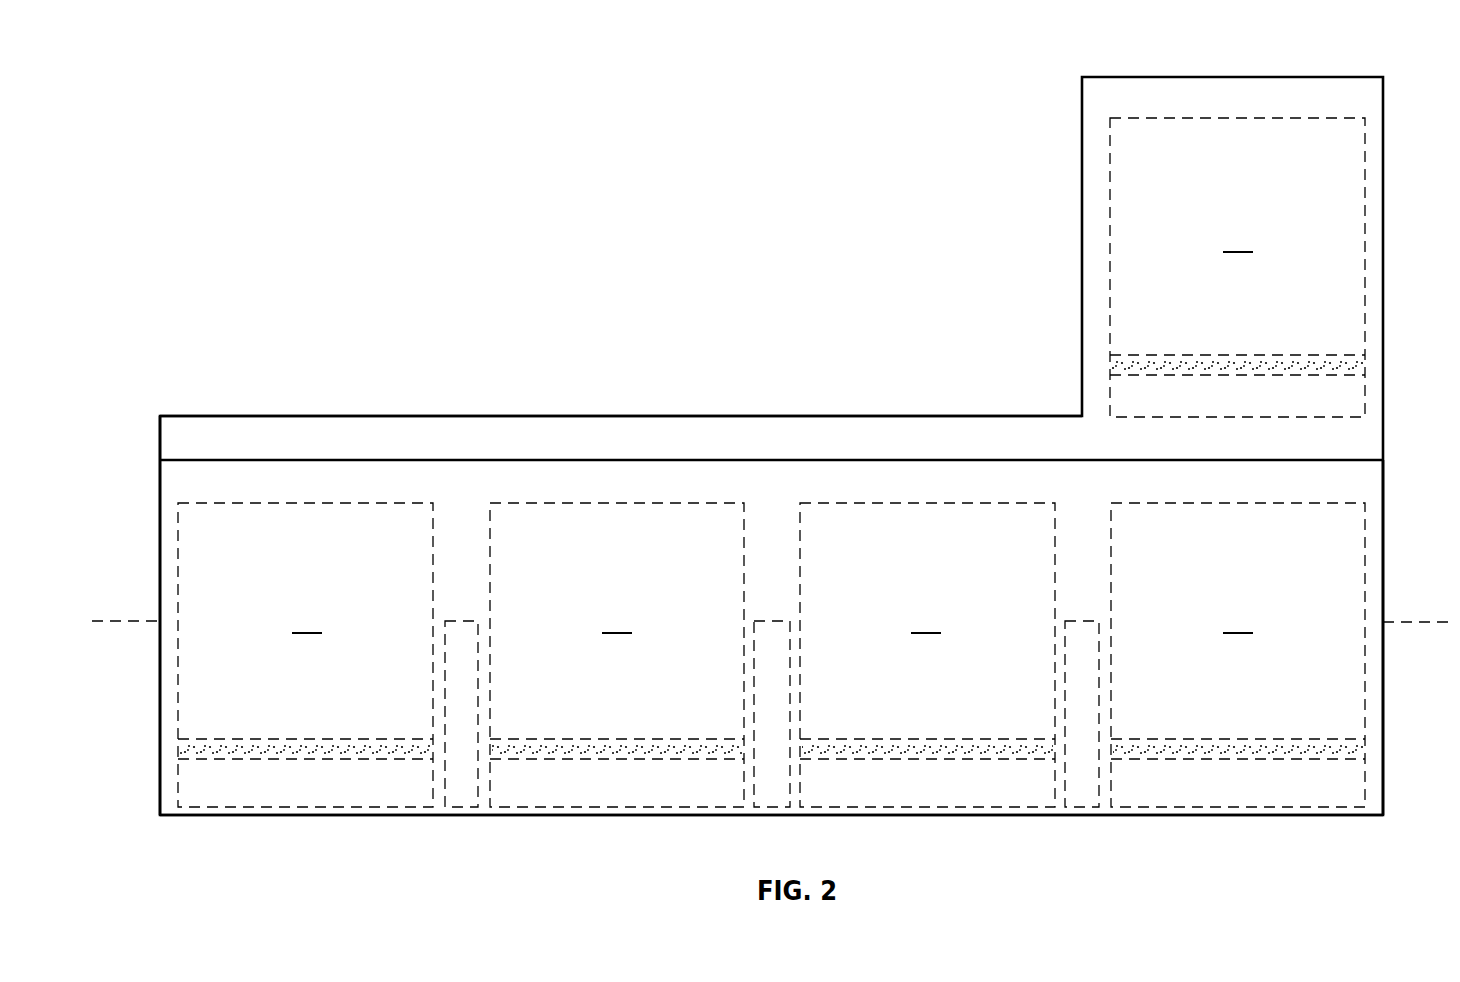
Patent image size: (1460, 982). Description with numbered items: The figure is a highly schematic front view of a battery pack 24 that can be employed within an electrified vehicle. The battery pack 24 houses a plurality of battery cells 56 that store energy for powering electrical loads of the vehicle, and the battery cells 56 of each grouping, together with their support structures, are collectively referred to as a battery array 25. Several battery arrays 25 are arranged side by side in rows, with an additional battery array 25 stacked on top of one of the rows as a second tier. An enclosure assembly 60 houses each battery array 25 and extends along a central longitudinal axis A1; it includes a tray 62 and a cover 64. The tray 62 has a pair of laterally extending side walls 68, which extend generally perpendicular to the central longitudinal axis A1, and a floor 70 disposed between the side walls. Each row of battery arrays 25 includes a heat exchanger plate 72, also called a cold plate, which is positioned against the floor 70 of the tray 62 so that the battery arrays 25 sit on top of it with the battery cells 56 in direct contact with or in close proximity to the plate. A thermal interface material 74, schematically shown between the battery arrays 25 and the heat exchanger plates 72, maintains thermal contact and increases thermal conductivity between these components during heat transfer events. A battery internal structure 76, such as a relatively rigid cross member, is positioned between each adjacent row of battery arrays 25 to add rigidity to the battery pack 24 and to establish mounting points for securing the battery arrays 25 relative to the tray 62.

The battery pack 24 is at (755, 340).
The battery array 25 is at (318, 498).
The battery cells 56 is at (772, 428).
The enclosure assembly 60 is at (157, 439).
The tray 62 is at (157, 773).
The cover 64 is at (191, 412).
The laterally extending side walls 68 is at (160, 680).
The floor 70 is at (436, 815).
The heat exchanger plate 72 is at (236, 790).
The thermal interface material 74 is at (260, 748).
The battery internal structure 76 is at (452, 623).
The central longitudinal axis A1 is at (128, 620).